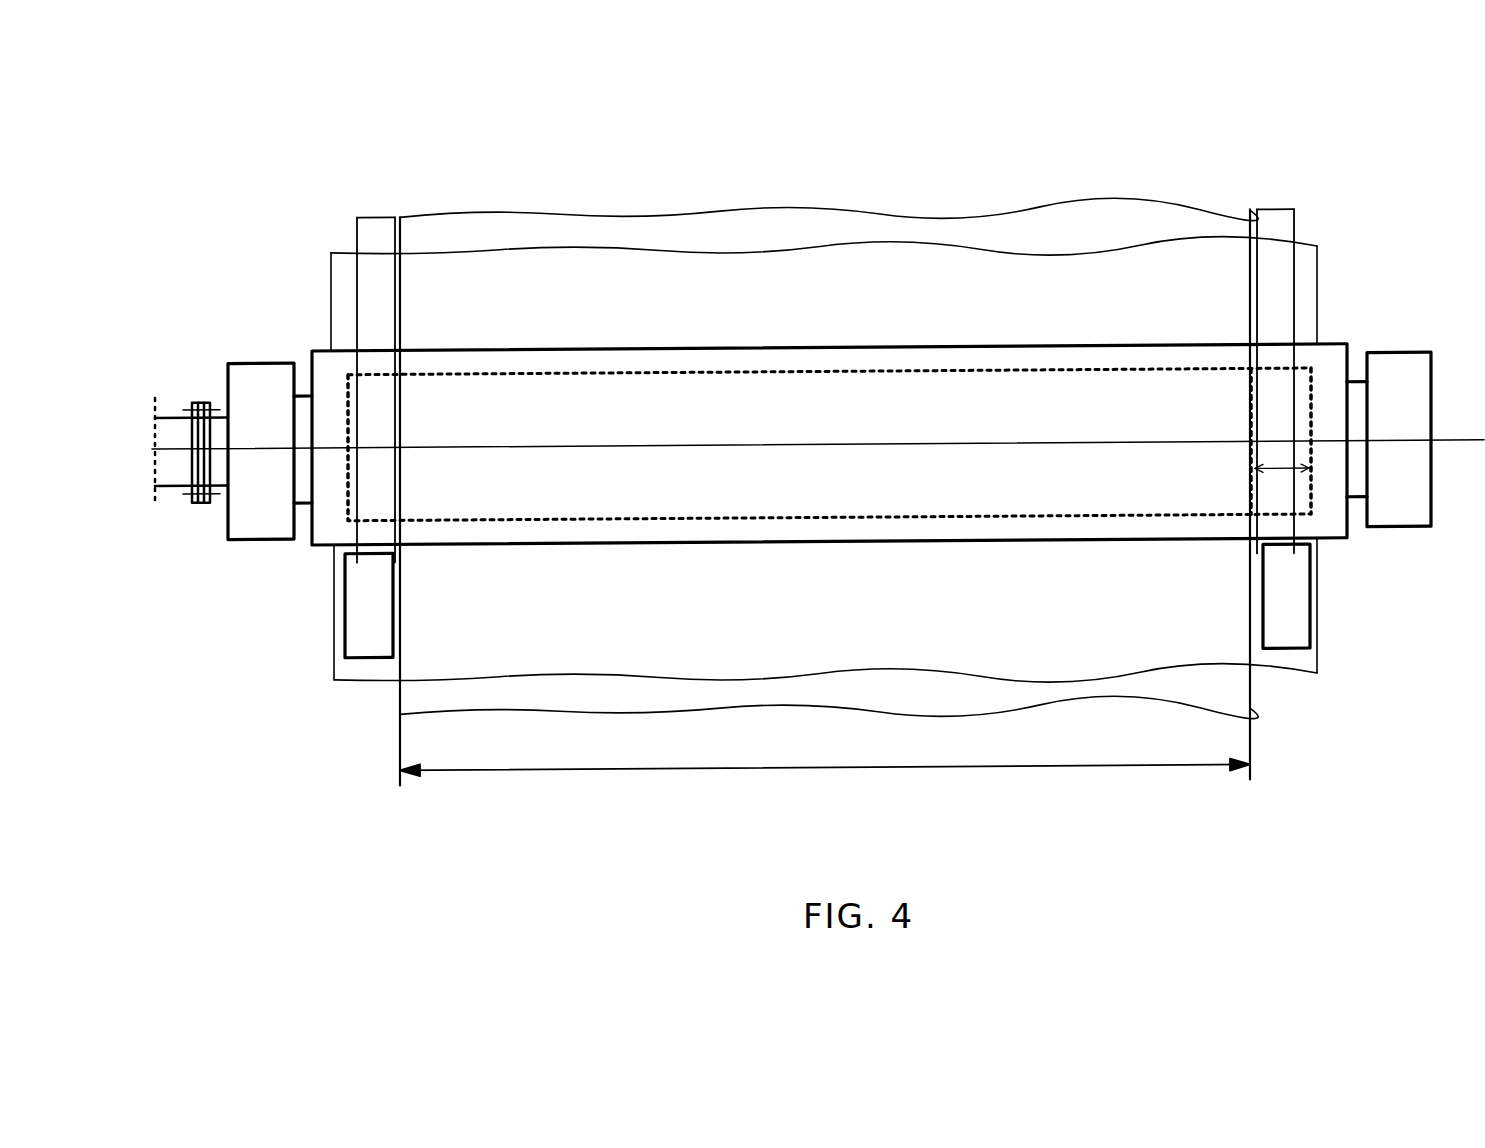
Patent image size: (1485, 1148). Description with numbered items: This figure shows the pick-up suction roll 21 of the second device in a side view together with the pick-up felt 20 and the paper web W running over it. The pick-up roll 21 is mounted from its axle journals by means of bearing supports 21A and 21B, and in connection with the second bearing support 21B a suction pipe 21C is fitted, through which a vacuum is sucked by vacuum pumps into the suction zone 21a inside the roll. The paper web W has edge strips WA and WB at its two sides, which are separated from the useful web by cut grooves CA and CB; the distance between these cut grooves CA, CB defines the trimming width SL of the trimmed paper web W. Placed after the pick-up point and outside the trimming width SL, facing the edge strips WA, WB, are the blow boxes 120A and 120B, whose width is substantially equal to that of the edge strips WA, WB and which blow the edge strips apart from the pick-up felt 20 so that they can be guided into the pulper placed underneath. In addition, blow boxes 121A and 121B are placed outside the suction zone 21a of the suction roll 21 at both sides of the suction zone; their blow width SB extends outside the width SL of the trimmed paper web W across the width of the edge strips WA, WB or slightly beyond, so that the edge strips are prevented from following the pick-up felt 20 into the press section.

The pick-up felt 20 is at (1318, 263).
The pick-up suction roll 21 is at (1333, 347).
The suction zone 21a is at (1153, 367).
The bearing support 21A is at (1410, 365).
The second bearing support 21B is at (265, 375).
The suction pipe 21C is at (172, 427).
The blow box 120A is at (1293, 599).
The blow box 120B is at (353, 633).
The blow box 121A is at (1269, 411).
The blow box 121B is at (394, 421).
The paper web W is at (836, 224).
The edge strip WA is at (1278, 220).
The edge strip WB is at (370, 230).
The cut groove CA is at (1250, 209).
The cut groove CB is at (399, 216).
The blow width SB is at (1279, 470).
The trimming width SL is at (839, 766).